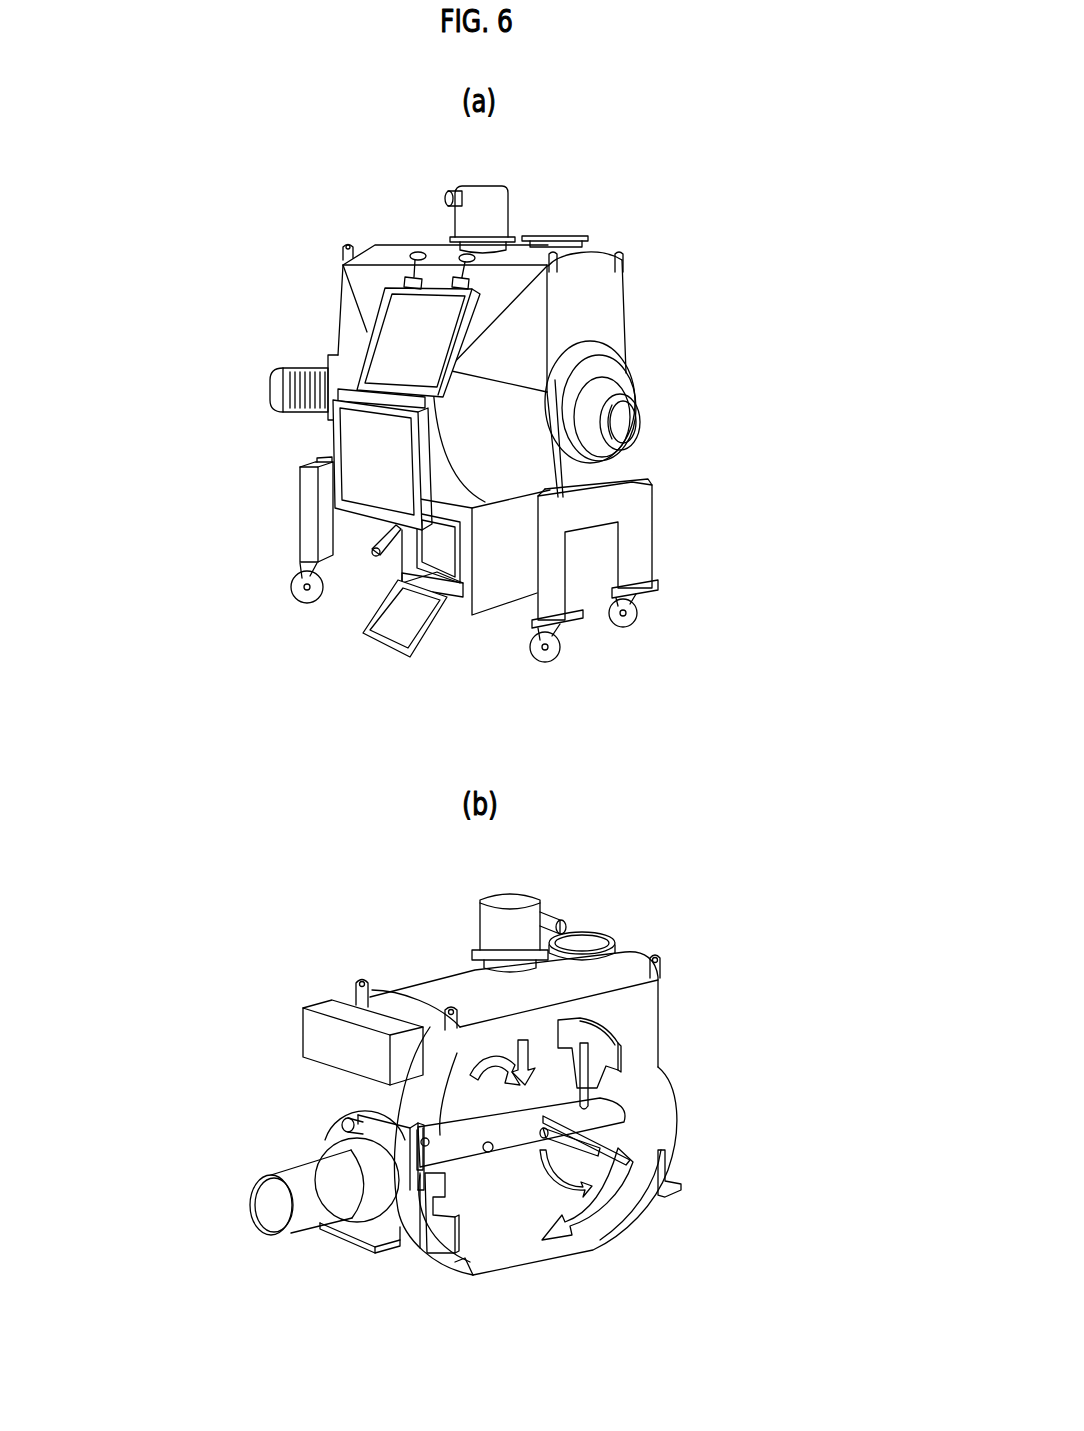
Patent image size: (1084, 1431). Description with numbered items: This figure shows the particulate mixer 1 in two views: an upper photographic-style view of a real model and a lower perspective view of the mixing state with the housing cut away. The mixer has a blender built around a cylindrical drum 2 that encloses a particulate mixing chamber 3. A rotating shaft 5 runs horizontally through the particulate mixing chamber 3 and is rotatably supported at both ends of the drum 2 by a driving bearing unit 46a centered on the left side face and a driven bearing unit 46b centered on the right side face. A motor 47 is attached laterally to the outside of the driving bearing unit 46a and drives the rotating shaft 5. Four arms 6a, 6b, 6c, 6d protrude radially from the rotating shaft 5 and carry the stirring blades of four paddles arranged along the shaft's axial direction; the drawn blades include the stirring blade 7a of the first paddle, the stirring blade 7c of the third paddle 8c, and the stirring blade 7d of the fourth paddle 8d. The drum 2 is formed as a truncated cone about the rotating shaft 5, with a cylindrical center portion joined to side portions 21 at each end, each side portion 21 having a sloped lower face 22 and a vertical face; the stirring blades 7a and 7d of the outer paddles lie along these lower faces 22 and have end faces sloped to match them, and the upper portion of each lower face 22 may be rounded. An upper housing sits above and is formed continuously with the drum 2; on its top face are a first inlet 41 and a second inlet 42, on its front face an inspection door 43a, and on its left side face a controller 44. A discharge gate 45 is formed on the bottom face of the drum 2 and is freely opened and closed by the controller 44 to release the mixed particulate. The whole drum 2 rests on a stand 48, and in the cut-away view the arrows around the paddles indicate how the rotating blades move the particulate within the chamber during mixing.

The particulate mixer 1 is at (700, 210).
The cylindrical drum 2 is at (612, 300).
The particulate mixing chamber 3 is at (652, 1062).
The rotating shaft 5 is at (512, 1143).
The arm 6a is at (433, 1177).
The arm 6b is at (490, 1140).
The arm 6c is at (560, 1140).
The arm 6d is at (585, 1103).
The stirring blade 7a is at (450, 1233).
The stirring blade 7c is at (597, 1137).
The stirring blade 7d is at (590, 1030).
The third paddle 8c is at (610, 1142).
The fourth paddle 8d is at (620, 1040).
The side portion 21 is at (453, 1282).
The lower face 22 is at (633, 1207).
The first inlet 41 is at (498, 208).
The second inlet 42 is at (560, 238).
The inspection door 43a is at (347, 455).
The controller 44 is at (310, 1037).
The discharge gate 45 is at (423, 553).
The driving bearing unit 46a is at (343, 1130).
The driven bearing unit 46b is at (631, 428).
The motor 47 is at (300, 373).
The stand 48 is at (648, 499).